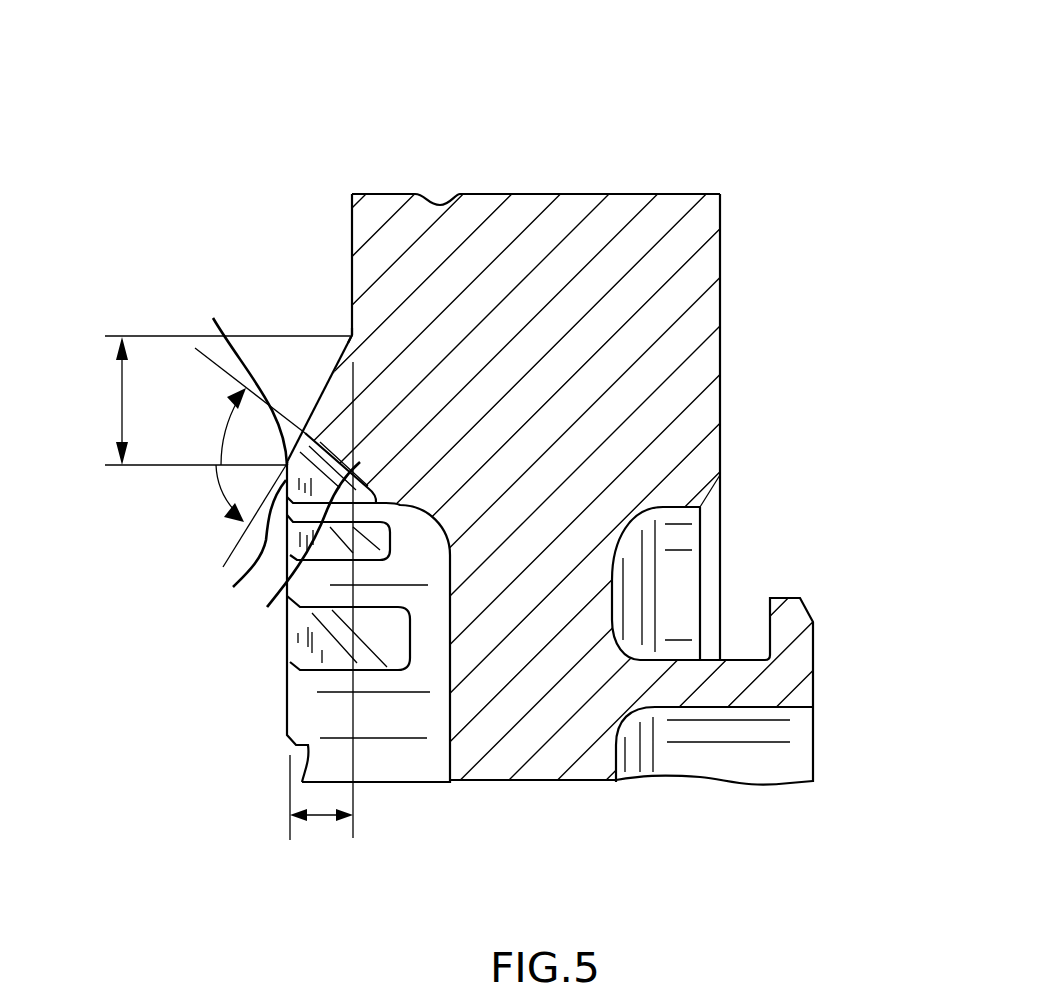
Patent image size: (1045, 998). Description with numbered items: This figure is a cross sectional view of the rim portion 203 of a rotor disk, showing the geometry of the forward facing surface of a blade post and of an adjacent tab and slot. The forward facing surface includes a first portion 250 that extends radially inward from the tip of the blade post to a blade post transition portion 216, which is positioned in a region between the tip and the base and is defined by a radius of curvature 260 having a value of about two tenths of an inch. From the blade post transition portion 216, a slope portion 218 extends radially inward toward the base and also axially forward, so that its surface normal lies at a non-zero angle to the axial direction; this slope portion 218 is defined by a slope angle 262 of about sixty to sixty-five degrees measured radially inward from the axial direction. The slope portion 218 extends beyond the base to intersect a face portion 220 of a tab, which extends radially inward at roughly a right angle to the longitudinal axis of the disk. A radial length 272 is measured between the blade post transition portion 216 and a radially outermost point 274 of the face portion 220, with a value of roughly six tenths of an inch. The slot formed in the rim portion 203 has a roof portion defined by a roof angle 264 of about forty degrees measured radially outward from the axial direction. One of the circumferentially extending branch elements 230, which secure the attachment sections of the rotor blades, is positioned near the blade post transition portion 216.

The rim portion 203 is at (573, 105).
The blade post transition portion 216 is at (349, 312).
The first portion 250 is at (352, 230).
The radius of curvature 260 is at (352, 336).
The radially outermost point 274 is at (325, 876).
The radial length 272 is at (120, 394).
The slope portion 218 is at (323, 391).
The roof angle 264 is at (218, 436).
The slope angle 262 is at (213, 490).
The face portion 220 is at (240, 548).
The branch elements 230 is at (300, 552).